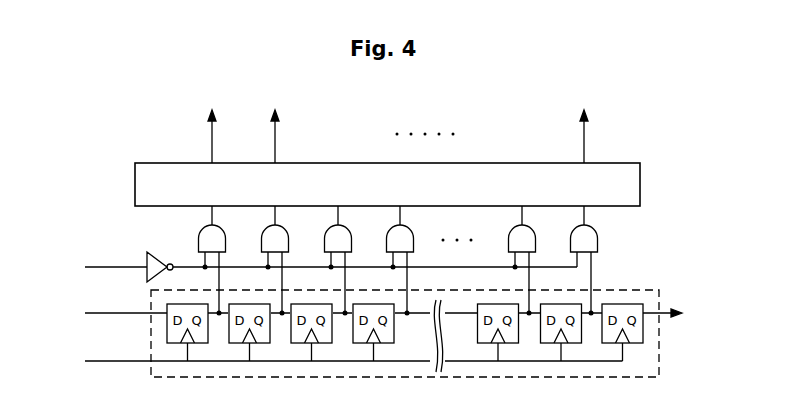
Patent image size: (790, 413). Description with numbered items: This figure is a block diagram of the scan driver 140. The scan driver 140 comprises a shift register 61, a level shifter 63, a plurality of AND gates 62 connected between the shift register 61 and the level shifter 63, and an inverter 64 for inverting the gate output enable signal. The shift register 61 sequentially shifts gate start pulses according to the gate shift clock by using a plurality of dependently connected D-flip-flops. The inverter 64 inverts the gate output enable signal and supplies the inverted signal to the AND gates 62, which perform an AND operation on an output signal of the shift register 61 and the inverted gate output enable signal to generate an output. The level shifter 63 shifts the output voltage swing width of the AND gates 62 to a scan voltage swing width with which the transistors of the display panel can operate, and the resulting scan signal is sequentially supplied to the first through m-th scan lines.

The scan driver 140 is at (84, 148).
The level shifter 63 is at (377, 192).
The AND gates 62 is at (598, 240).
The shift register 61 is at (659, 333).
The inverter 64 is at (146, 256).